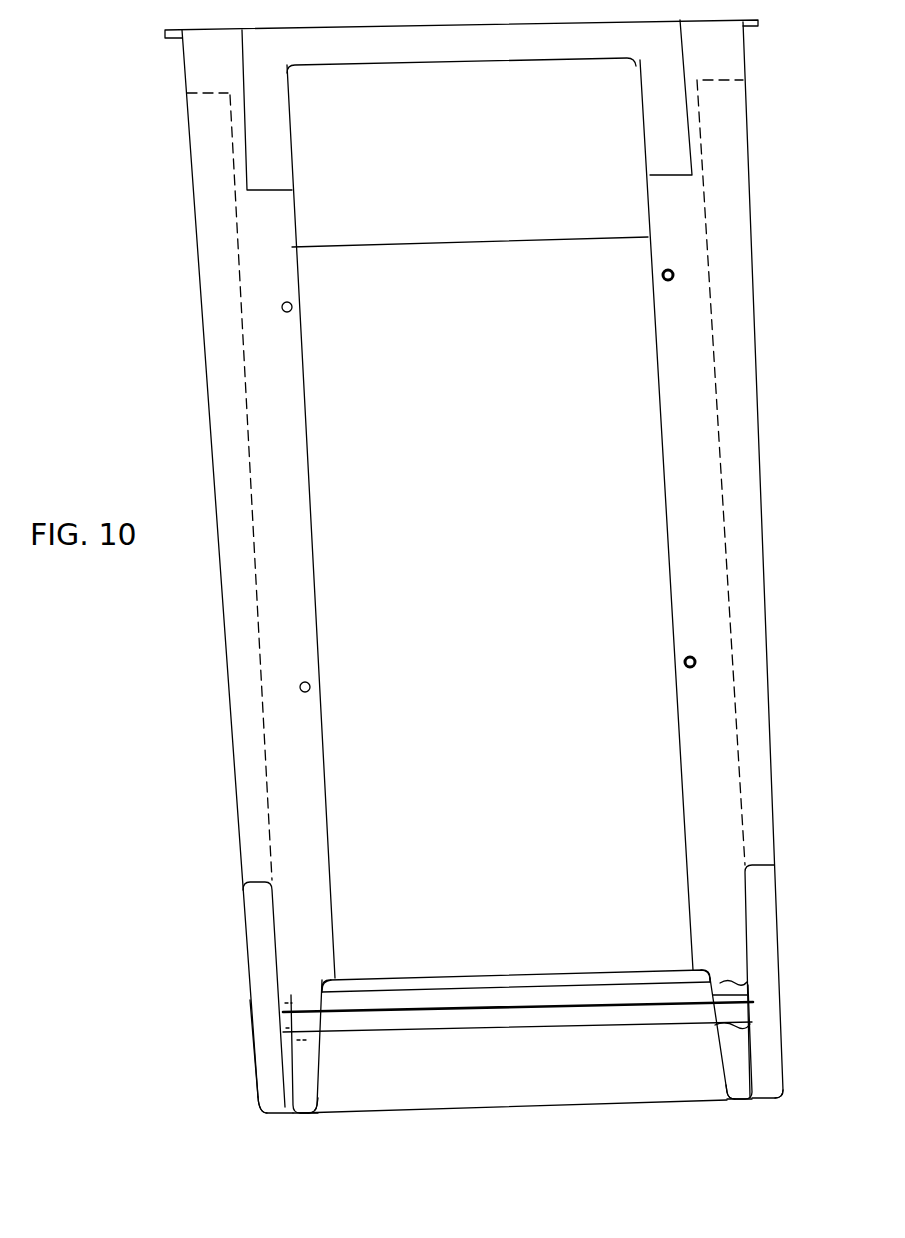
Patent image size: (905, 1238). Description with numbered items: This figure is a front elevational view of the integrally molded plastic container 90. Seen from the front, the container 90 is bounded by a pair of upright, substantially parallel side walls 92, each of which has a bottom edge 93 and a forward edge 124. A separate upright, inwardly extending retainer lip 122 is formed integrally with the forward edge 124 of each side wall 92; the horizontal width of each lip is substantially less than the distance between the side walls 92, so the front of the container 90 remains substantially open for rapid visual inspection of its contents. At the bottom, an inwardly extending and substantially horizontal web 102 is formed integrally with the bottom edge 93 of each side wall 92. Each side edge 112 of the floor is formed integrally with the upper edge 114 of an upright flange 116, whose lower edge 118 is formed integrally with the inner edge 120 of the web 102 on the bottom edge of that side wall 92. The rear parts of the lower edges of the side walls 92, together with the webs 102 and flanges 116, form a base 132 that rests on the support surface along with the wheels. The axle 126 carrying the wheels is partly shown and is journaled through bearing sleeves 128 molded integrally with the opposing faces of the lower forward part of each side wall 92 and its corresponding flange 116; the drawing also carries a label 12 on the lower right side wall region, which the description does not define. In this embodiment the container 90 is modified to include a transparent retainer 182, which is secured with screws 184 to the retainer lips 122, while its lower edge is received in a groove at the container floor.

The container 90 is at (212, 712).
The side wall 92 is at (208, 433).
The bottom edge 93 is at (258, 1112).
The web 102 is at (307, 1117).
The side edge 112 is at (338, 993).
The upper edge 114 is at (317, 1003).
The upright flange 116 is at (318, 1053).
The lower edge 118 is at (318, 1103).
The inner edge 120 is at (317, 1107).
The retainer lip 122 is at (320, 597).
The forward edge 124 is at (280, 915).
The right wall insert 12 is at (747, 900).
The axle 126 is at (465, 1028).
The bearing sleeve 128 is at (283, 1058).
The base 132 is at (232, 1087).
The transparent retainer 182 is at (462, 237).
The screw 184 is at (287, 312).